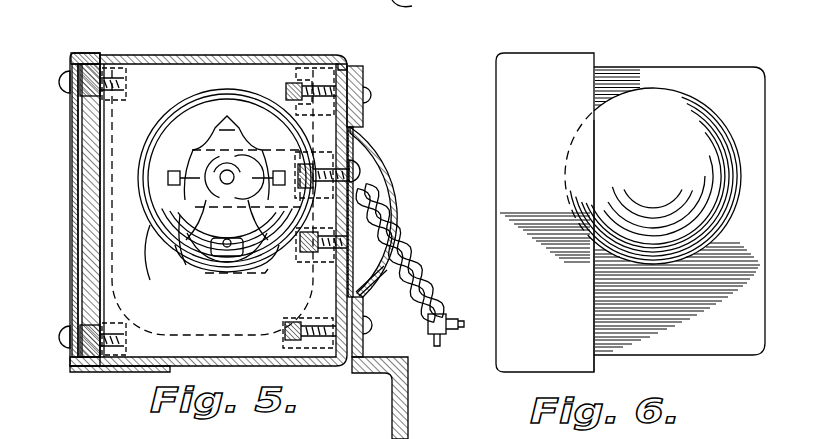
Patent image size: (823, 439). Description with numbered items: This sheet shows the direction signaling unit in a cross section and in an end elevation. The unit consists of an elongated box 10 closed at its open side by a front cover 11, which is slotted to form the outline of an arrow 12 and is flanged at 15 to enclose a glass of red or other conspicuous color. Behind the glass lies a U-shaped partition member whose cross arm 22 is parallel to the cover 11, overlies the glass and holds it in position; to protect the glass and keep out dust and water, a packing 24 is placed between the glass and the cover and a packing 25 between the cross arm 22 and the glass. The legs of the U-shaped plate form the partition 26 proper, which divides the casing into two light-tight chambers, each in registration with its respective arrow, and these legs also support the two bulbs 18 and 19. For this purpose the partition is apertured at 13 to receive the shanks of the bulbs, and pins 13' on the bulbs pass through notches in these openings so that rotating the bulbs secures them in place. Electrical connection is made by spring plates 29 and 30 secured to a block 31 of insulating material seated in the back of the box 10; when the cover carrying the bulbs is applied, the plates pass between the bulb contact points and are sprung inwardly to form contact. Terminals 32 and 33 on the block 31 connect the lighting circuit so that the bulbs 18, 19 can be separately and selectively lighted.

In FIG. 5, the elongated box 10 is at (326, 362).
In FIG. 5, the front cover 11 is at (70, 242).
In FIG. 6, the front cover 11 is at (560, 66).
In FIG. 5, the arrow 12 is at (74, 266).
In FIG. 5, the aperture 13 is at (226, 146).
In FIG. 5, the pin 13' is at (217, 150).
In FIG. 5, the flange 15 is at (147, 373).
In FIG. 6, the flange 15 is at (596, 148).
In FIG. 5, the bulb 18 is at (196, 308).
In FIG. 5, the bulb 19 is at (168, 233).
In FIG. 6, the bulb 19 is at (685, 100).
In FIG. 5, the cross arm 22 is at (104, 124).
In FIG. 5, the packing 24 is at (72, 60).
In FIG. 5, the packing 25 is at (105, 55).
In FIG. 5, the partition 26 is at (200, 343).
In FIG. 6, the partition 26 is at (748, 78).
In FIG. 5, the spring plate 29 is at (256, 274).
In FIG. 5, the spring plate 30 is at (248, 152).
In FIG. 5, the block 31 is at (321, 100).
In FIG. 5, the terminal 32 is at (330, 240).
In FIG. 5, the terminal 33 is at (347, 173).